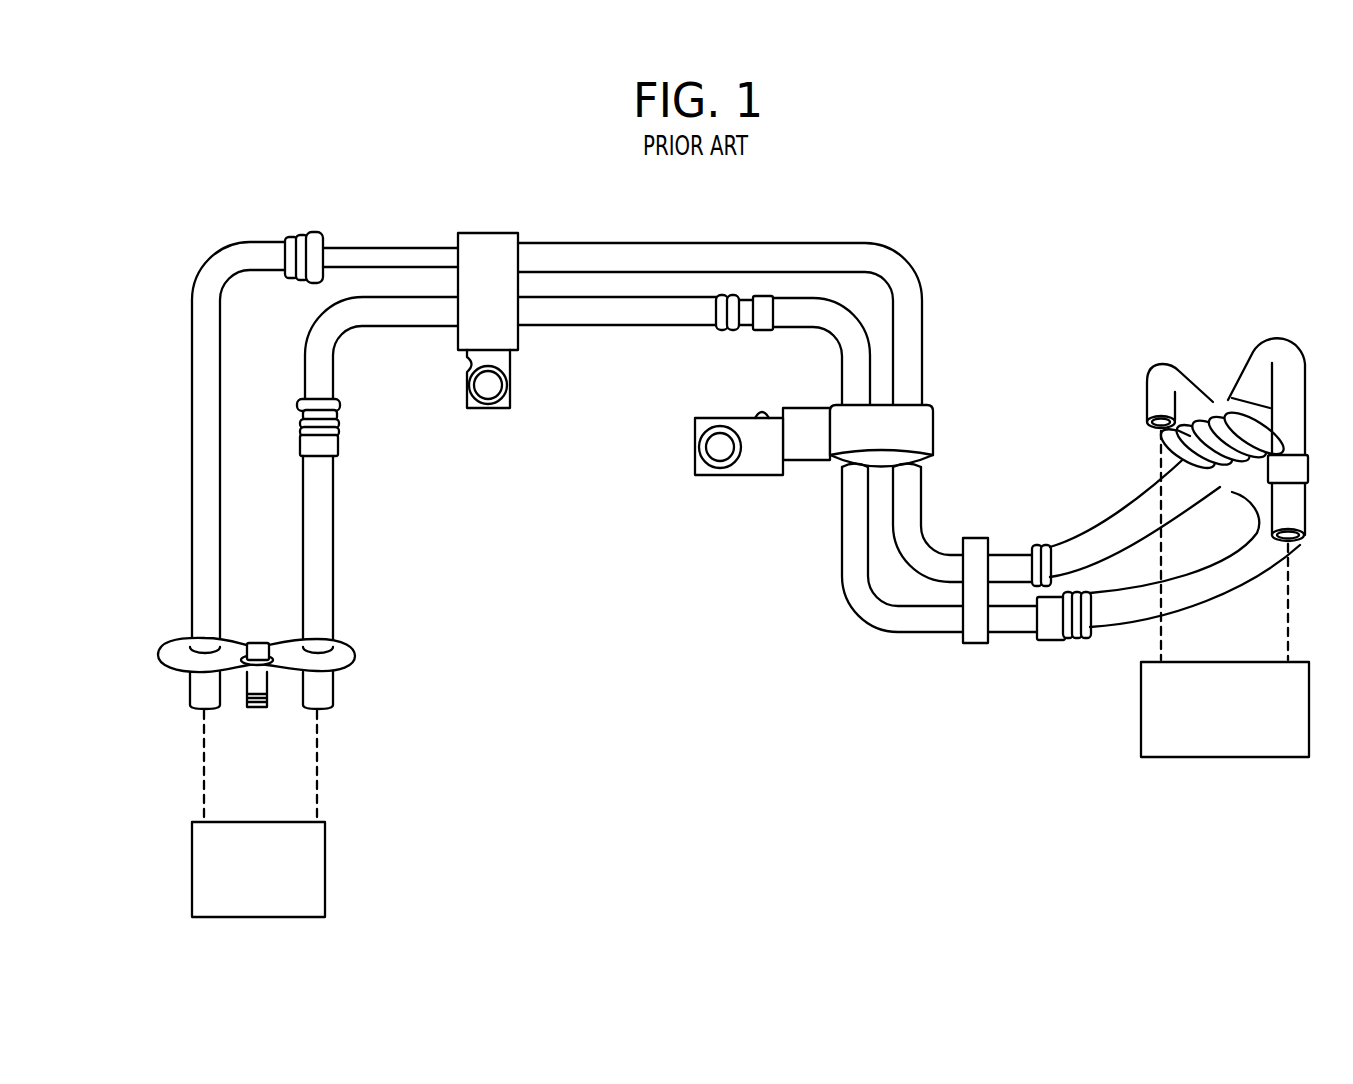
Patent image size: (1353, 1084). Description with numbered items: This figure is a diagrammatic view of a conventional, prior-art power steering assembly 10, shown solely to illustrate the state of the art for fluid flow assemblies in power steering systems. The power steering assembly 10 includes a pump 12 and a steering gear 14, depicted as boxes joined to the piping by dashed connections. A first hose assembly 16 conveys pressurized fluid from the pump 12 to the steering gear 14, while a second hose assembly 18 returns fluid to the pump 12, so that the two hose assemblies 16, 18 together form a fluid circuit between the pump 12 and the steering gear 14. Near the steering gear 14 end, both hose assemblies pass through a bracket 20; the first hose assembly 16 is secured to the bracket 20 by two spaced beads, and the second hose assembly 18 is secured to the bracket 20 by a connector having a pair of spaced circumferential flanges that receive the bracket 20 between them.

The power steering assembly 10 is at (962, 222).
The pump 12 is at (1141, 716).
The steering gear 14 is at (325, 868).
The first hose assembly 16 is at (333, 381).
The second hose assembly 18 is at (192, 405).
The bracket 20 is at (356, 656).